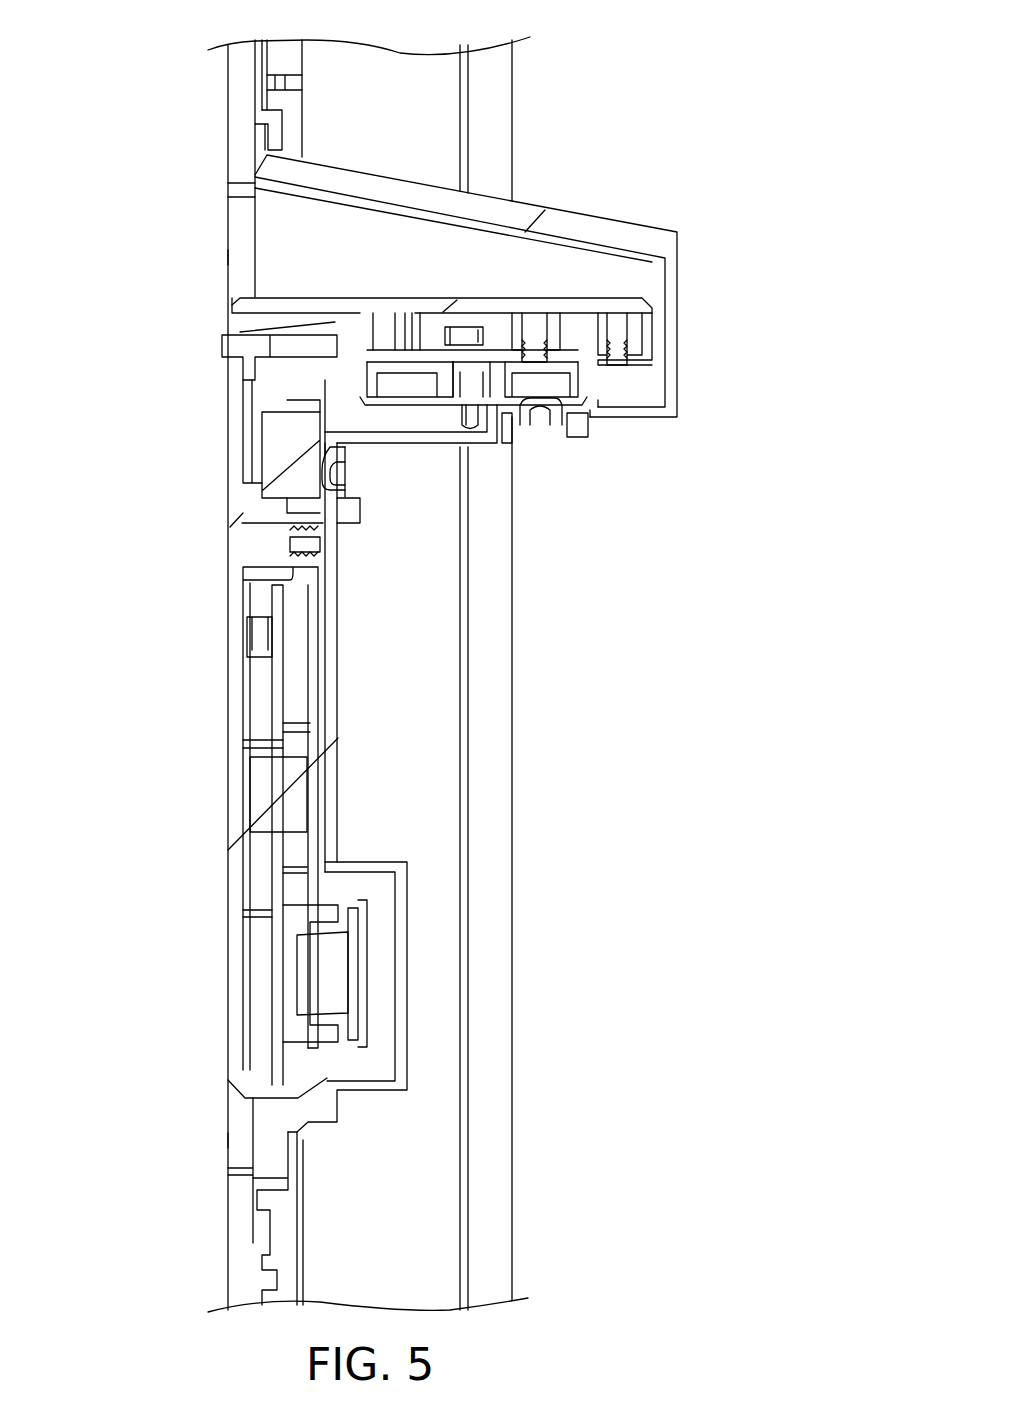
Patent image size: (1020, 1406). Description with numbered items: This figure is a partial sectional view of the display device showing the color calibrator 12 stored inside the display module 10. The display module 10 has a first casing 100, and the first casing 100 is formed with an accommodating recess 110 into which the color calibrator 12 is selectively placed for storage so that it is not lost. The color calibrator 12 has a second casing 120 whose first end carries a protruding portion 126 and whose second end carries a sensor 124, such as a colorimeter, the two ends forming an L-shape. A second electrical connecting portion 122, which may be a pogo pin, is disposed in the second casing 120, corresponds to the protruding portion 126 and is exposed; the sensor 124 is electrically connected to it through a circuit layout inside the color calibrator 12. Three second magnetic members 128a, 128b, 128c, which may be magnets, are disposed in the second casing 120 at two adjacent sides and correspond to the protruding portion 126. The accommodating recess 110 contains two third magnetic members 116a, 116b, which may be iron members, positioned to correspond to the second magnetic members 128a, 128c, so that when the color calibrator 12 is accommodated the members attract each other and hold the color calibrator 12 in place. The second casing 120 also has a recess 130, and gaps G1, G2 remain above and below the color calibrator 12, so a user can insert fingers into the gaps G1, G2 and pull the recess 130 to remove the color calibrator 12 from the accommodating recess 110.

The display module 10 is at (216, 88).
The first casing 100 is at (226, 118).
The accommodating recess 110 is at (545, 277).
The recess 130 is at (275, 300).
The second magnetic member 128a is at (531, 387).
The second magnetic member 128b is at (402, 393).
The second magnetic member 128c is at (282, 450).
The protruding portion 126 is at (358, 382).
The second electrical connecting portion 122 is at (470, 430).
The third magnetic member 116a is at (540, 413).
The third magnetic member 116b is at (347, 468).
The color calibrator 12 is at (200, 704).
The second casing 120 is at (226, 752).
The sensor 124 is at (348, 973).
The gap G1 is at (240, 256).
The gap G2 is at (230, 1138).